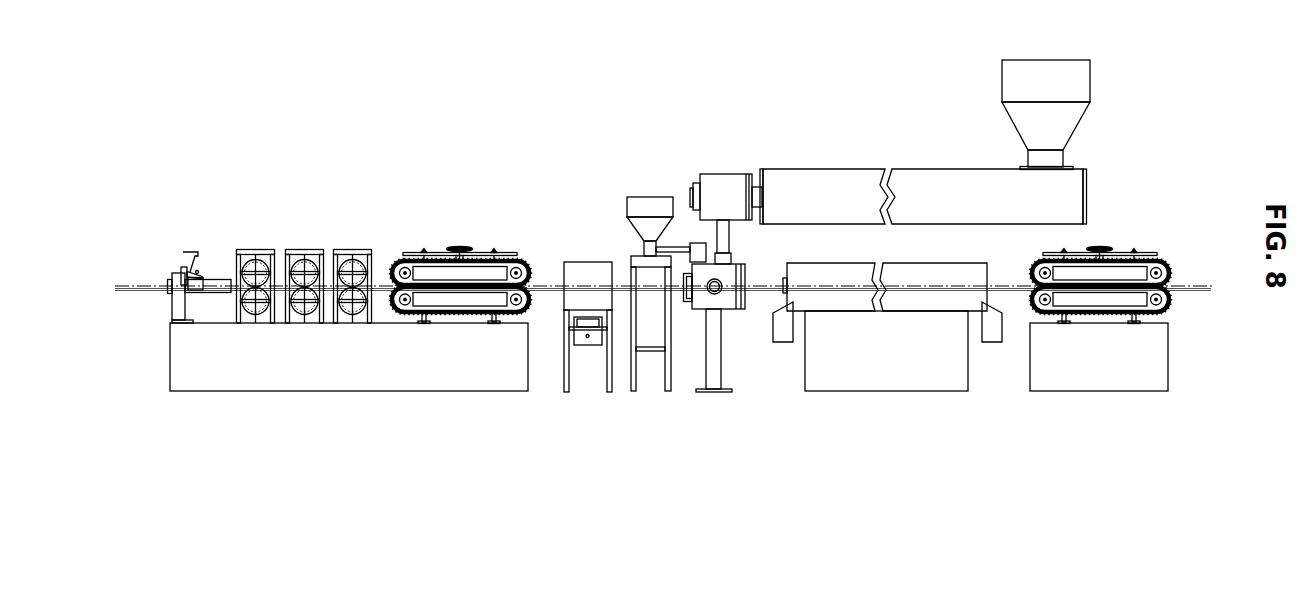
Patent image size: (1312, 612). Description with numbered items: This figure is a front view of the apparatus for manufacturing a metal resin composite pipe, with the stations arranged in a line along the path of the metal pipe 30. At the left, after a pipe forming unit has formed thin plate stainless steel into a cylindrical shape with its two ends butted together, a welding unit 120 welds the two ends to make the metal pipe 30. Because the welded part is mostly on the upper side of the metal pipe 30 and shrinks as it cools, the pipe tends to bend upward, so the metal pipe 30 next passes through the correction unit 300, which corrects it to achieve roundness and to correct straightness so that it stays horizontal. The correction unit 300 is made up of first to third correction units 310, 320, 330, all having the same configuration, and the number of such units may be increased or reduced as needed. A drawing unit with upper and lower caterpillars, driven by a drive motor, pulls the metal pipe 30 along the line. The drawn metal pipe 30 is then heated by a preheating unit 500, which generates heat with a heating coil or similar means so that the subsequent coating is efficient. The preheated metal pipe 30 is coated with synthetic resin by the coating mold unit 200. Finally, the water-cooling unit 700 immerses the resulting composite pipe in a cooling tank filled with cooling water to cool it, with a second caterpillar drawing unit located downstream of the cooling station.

The metal pipe 30 is at (140, 296).
The welding unit 120 is at (188, 250).
The correction unit 300 is at (313, 237).
The first correction unit 310 is at (258, 249).
The second correction unit 320 is at (306, 249).
The third correction unit 330 is at (360, 260).
The preheating unit 500 is at (584, 258).
The coating mold unit 200 is at (739, 320).
The water-cooling unit 700 is at (922, 314).